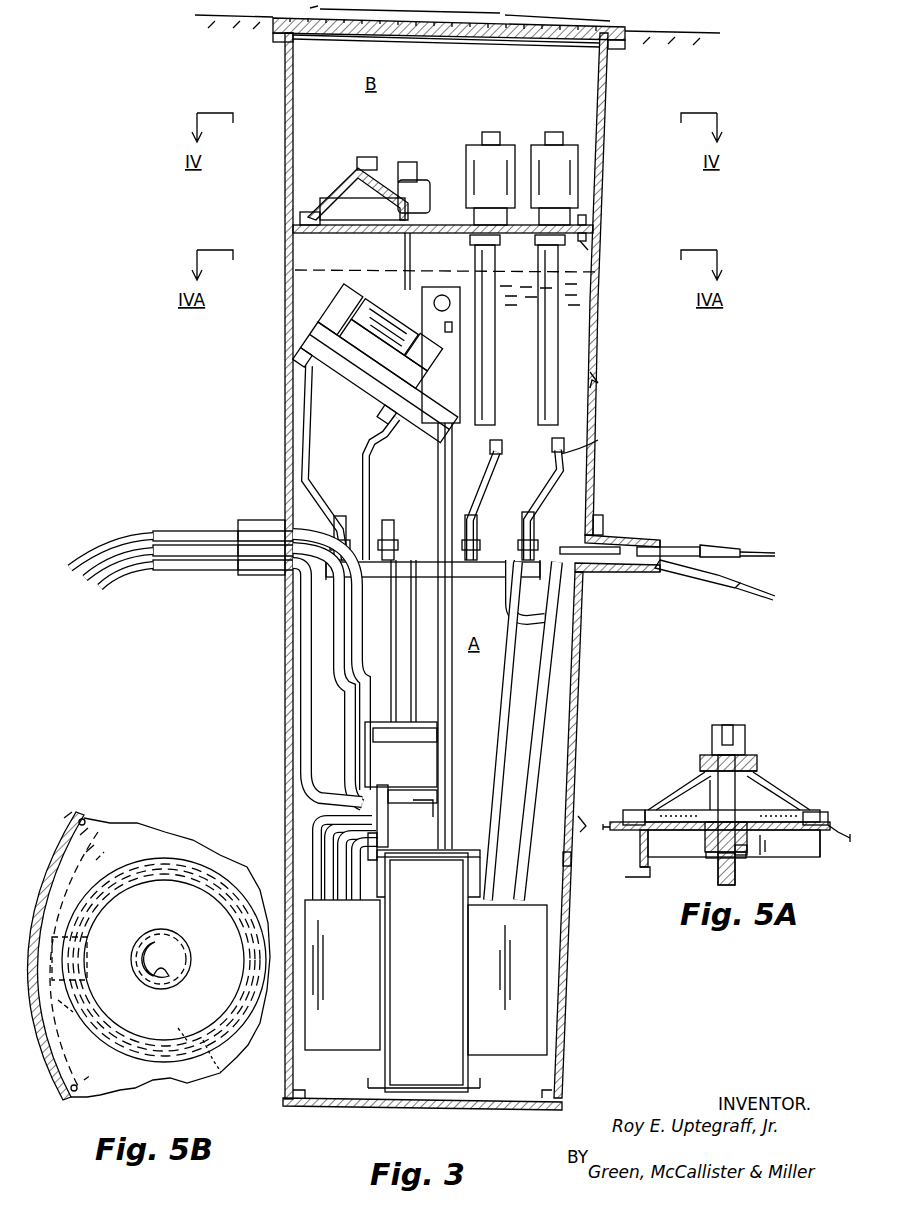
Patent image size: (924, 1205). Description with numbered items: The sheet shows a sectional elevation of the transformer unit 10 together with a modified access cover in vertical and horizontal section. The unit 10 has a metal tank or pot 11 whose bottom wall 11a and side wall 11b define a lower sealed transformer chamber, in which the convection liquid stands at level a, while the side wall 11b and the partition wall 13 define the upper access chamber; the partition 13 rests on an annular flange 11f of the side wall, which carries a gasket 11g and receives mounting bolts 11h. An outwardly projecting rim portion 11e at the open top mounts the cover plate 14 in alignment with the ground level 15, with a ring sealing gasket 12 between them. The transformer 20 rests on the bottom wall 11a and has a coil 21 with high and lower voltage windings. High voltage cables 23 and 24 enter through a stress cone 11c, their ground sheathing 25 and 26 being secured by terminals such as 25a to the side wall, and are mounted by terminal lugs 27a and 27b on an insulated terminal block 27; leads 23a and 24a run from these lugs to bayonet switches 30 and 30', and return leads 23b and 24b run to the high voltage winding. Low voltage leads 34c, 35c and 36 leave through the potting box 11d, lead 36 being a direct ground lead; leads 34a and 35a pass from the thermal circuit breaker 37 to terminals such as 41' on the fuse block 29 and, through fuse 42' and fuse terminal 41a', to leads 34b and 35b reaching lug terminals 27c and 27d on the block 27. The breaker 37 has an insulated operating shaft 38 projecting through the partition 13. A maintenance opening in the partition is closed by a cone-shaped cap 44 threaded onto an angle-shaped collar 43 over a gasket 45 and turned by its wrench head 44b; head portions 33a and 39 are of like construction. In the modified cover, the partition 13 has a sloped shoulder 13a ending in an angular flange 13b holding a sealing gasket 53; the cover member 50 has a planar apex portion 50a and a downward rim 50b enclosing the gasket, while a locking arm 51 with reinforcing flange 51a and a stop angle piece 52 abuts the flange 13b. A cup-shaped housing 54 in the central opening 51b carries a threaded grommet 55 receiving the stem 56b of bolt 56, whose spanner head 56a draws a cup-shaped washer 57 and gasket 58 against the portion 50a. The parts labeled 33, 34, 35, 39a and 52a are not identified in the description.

In FIG. 3, the transformer unit 10 is at (598, 386).
In FIG. 5B, the transformer unit 10 is at (70, 808).
In FIG. 3, the tank 11 is at (598, 420).
In FIG. 5B, the tank 11 is at (60, 834).
In FIG. 3, the bottom wall 11a is at (335, 1110).
In FIG. 3, the side wall 11b is at (608, 140).
In FIG. 3, the stress cone 11c is at (625, 572).
In FIG. 3, the potting or junction box 11d is at (255, 520).
In FIG. 3, the flange or rim portion 11e is at (275, 40).
In FIG. 3, the annular flange portion 11f is at (600, 248).
In FIG. 5B, the annular flange portion 11f is at (100, 824).
In FIG. 3, the gasket 11g is at (600, 232).
In FIG. 3, the mounting bolts 11h is at (600, 212).
In FIG. 5B, the mounting bolts 11h is at (90, 815).
In FIG. 3, the ring sealing gasket 12 is at (545, 47).
In FIG. 3, the partition wall 13 is at (462, 224).
In FIG. 5A, the partition wall 13 is at (605, 832).
In FIG. 5B, the partition wall 13 is at (168, 1088).
In FIG. 3, the annular shoulder portion 13a is at (598, 816).
In FIG. 5A, the annular shoulder portion 13a is at (624, 824).
In FIG. 5A, the angular flange or rim portion 13b is at (660, 806).
In FIG. 5B, the angular flange or rim portion 13b is at (178, 1031).
In FIG. 3, the cover plate 14 is at (515, 22).
In FIG. 3, the ground level 15 is at (690, 30).
In FIG. 3, the transformer 20 is at (424, 971).
In FIG. 3, the coil 21 is at (538, 947).
In FIG. 3, the high voltage cable 23 is at (760, 552).
In FIG. 3, the high voltage lead 23a is at (560, 452).
In FIG. 3, the return lead 23b is at (548, 702).
In FIG. 3, the high voltage cable 24 is at (765, 598).
In FIG. 3, the high voltage lead 24a is at (482, 455).
In FIG. 3, the return lead 24b is at (496, 737).
In FIG. 3, the ground wire or sheathing 25 is at (715, 548).
In FIG. 3, the wire lead and terminal 25a is at (604, 515).
In FIG. 3, the ground wire or sheathing 26 is at (560, 612).
In FIG. 3, the terminal block 27 is at (345, 578).
In FIG. 3, the terminal lug 27a is at (538, 540).
In FIG. 3, the terminal lug 27b is at (477, 540).
In FIG. 3, the lug terminal 27c is at (395, 548).
In FIG. 3, the lug terminal 27d is at (334, 535).
In FIG. 3, the fuse block 29 is at (302, 338).
In FIG. 3, the bayonet switch 30 is at (593, 387).
In FIG. 3, the bayonet switch 30' is at (517, 330).
In FIG. 3, the fuse terminal housing 33 is at (522, 185).
In FIG. 3, the head portion 33a is at (553, 132).
In FIG. 3, the low-voltage coil 34 is at (350, 898).
In FIG. 3, the lead 34a is at (362, 724).
In FIG. 3, the lead 34b is at (300, 412).
In FIG. 3, the low voltage lead 34c is at (95, 540).
In FIG. 3, the low-voltage lead 35 is at (302, 838).
In FIG. 3, the lead 35a is at (348, 700).
In FIG. 3, the lead 35b is at (365, 425).
In FIG. 3, the low voltage lead 35c is at (88, 582).
In FIG. 3, the ground lead 36 is at (118, 575).
In FIG. 3, the thermal circuit breaker 37 is at (401, 710).
In FIG. 3, the operating rod or shaft 38 is at (410, 252).
In FIG. 3, the head portion 39 is at (432, 195).
In FIG. 3, the switch cap 39a is at (410, 162).
In FIG. 3, the terminal 41' is at (396, 346).
In FIG. 3, the fuse terminal 41a' is at (300, 309).
In FIG. 3, the fuse 42' is at (384, 261).
In FIG. 3, the collar 43 is at (340, 225).
In FIG. 3, the cone-shaped cap 44 is at (318, 178).
In FIG. 3, the wrench head portion 44b is at (358, 157).
In FIG. 3, the gasket 45 is at (300, 217).
In FIG. 5A, the cover member 50 is at (678, 786).
In FIG. 5B, the cover member 50 is at (140, 893).
In FIG. 5A, the planar apex portion 50a is at (712, 782).
In FIG. 5A, the annular flange or rim portion 50b is at (818, 810).
In FIG. 5B, the annular flange or rim portion 50b is at (190, 868).
In FIG. 5A, the locking member or arm 51 is at (792, 855).
In FIG. 5B, the locking member or arm 51 is at (221, 1072).
In FIG. 5A, the reinforcing flange 51a is at (820, 856).
In FIG. 5A, the central opening 51b is at (704, 834).
In FIG. 3, the stop angle piece 52 is at (572, 862).
In FIG. 5A, the stop angle piece 52 is at (650, 872).
In FIG. 5B, the stop angle piece 52 is at (88, 946).
In FIG. 5A, the clamp bracket leg 52a is at (638, 850).
In FIG. 5B, the clamp bracket leg 52a is at (68, 1012).
In FIG. 5A, the sealing gasket 53 is at (832, 816).
In FIG. 5A, the cup-shaped housing member 54 is at (745, 856).
In FIG. 5A, the grommet 55 is at (708, 856).
In FIG. 5A, the mounting or securing bolt 56 is at (735, 793).
In FIG. 5A, the head 56a is at (745, 735).
In FIG. 5B, the head 56a is at (166, 942).
In FIG. 5A, the threaded stem portion 56b is at (718, 875).
In FIG. 5A, the cup-shaped washer 57 is at (700, 758).
In FIG. 5B, the cup-shaped washer 57 is at (190, 950).
In FIG. 5A, the sealing gasket 58 is at (760, 766).
In FIG. 5B, the sealing gasket 58 is at (186, 968).
In FIG. 3, the level of convection liquid a is at (600, 268).